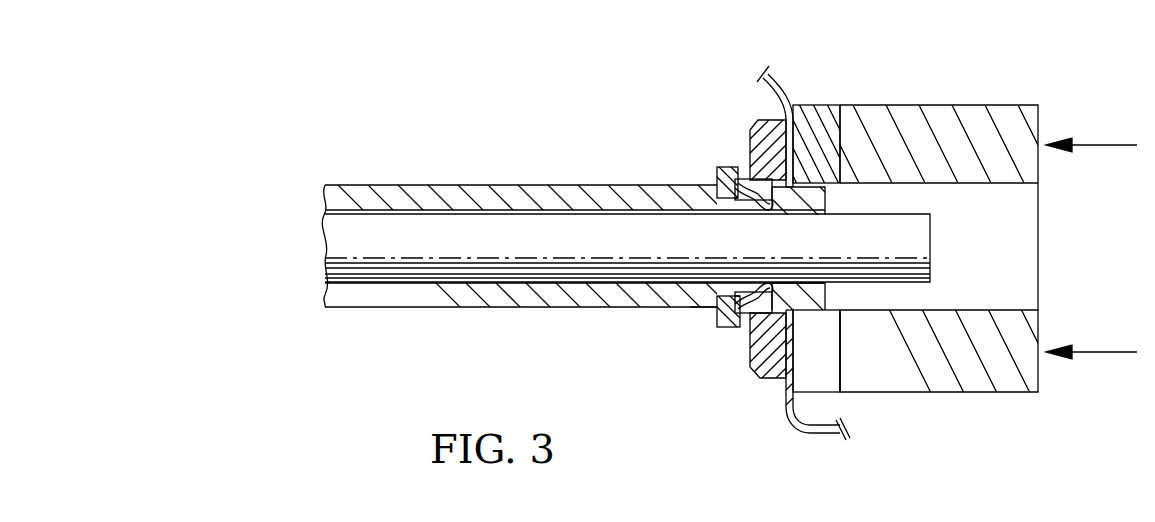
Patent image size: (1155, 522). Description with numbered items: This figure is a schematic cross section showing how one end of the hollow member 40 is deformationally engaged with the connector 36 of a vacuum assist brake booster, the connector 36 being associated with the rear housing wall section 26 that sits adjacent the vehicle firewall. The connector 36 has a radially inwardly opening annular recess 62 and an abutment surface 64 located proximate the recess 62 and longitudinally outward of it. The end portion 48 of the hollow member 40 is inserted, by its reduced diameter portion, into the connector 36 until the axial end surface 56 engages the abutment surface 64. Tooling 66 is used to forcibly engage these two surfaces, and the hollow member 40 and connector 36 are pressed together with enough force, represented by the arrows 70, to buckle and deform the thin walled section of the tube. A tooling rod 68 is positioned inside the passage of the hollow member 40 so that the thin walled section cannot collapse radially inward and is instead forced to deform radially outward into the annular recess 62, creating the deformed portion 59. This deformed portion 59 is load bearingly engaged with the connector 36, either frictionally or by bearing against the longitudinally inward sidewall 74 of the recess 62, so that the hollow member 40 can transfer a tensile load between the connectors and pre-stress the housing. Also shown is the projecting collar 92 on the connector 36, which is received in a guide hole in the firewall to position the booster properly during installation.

The rear housing wall section 26 is at (818, 434).
The connector 36 is at (758, 117).
The hollow member 40 is at (416, 188).
The end portion 48 is at (703, 308).
The axial end surface 56 is at (756, 325).
The deformed portion 59 is at (746, 320).
The annular recess 62 is at (748, 180).
The abutment surface 64 is at (798, 125).
The tooling 66 is at (1038, 107).
The tooling rod 68 is at (928, 232).
The arrows 70 is at (1120, 352).
The longitudinally inward sidewall 74 is at (732, 192).
The projecting collar 92 is at (826, 165).